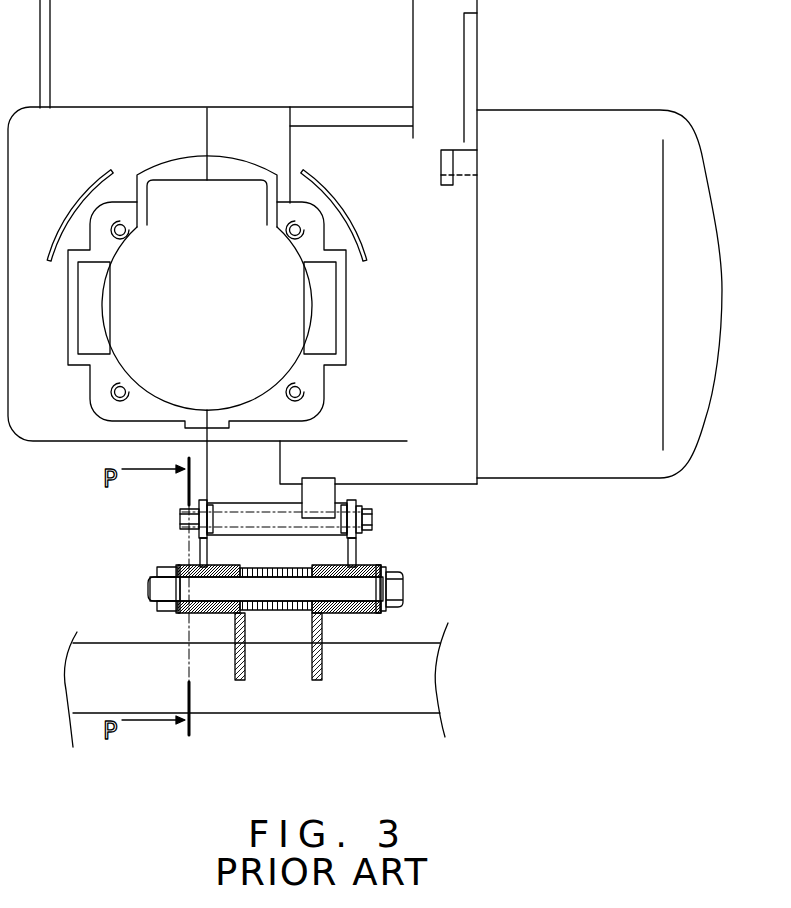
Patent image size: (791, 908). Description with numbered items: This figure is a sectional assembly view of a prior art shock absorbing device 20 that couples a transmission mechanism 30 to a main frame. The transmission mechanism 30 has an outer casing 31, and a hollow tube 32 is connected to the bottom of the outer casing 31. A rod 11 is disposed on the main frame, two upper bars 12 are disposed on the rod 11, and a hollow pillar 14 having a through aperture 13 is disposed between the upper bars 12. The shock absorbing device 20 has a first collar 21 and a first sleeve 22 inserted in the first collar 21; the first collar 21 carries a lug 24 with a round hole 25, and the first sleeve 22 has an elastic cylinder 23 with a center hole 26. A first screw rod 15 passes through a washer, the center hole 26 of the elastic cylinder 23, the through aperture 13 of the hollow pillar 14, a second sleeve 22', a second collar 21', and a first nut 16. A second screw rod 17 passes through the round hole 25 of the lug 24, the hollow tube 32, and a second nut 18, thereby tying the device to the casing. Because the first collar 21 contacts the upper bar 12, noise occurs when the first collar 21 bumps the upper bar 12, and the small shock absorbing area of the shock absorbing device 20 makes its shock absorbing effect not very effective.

The rod 11 is at (427, 672).
The upper bars 12 is at (245, 680).
The through aperture 13 is at (312, 608).
The hollow pillar 14 is at (275, 568).
The first screw rod 15 is at (401, 587).
The first nut 16 is at (155, 570).
The second screw rod 17 is at (372, 517).
The second nut 18 is at (182, 512).
The shock absorbing device 20 is at (133, 592).
The first collar 21 is at (391, 605).
The second collar 21' is at (161, 603).
The first sleeve 22 is at (346, 604).
The second sleeve 22' is at (209, 604).
The elastic cylinder 23 is at (184, 566).
The lug 24 is at (208, 500).
The round hole 25 is at (209, 533).
The center hole 26 is at (160, 608).
The transmission mechanism 30 is at (257, 107).
The outer casing 31 is at (440, 480).
The hollow tube 32 is at (268, 502).